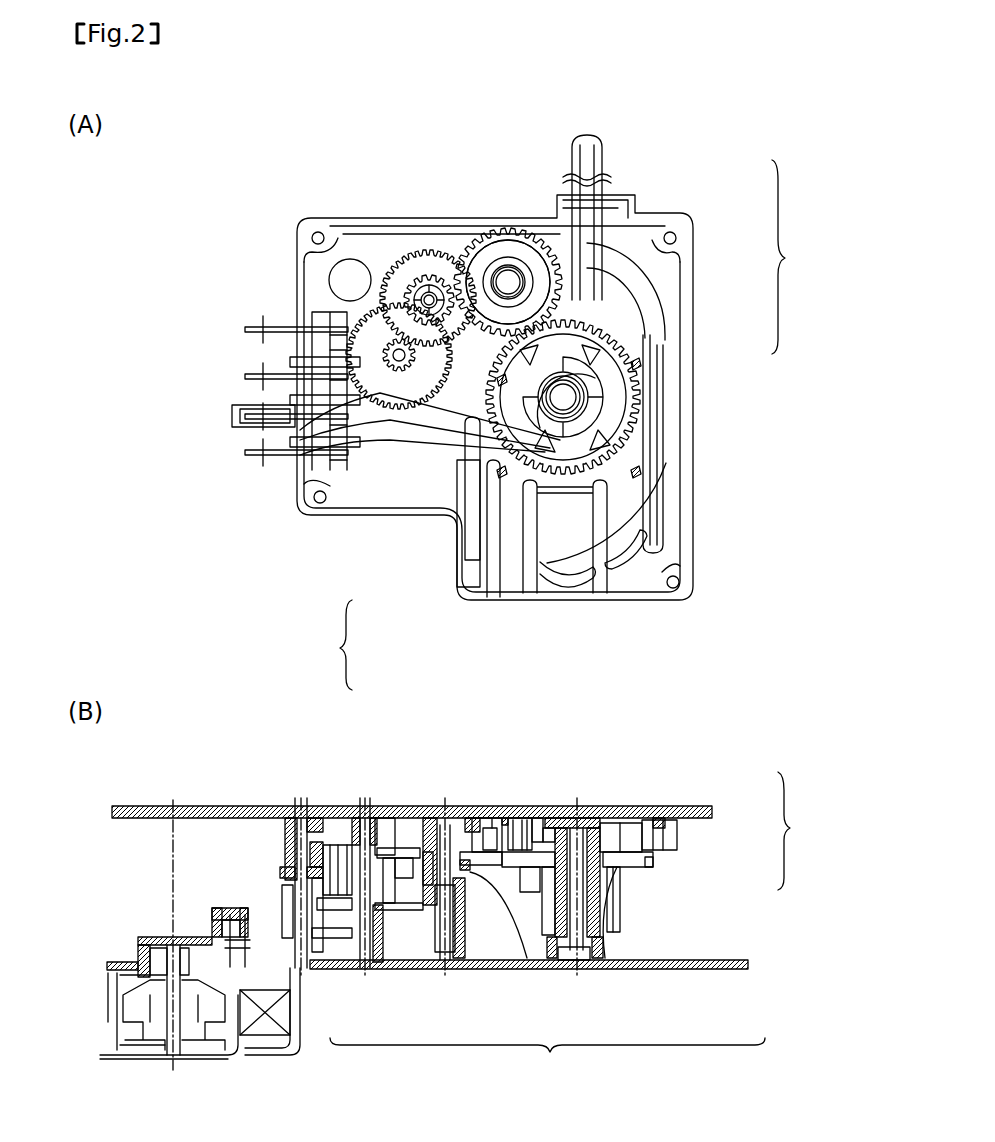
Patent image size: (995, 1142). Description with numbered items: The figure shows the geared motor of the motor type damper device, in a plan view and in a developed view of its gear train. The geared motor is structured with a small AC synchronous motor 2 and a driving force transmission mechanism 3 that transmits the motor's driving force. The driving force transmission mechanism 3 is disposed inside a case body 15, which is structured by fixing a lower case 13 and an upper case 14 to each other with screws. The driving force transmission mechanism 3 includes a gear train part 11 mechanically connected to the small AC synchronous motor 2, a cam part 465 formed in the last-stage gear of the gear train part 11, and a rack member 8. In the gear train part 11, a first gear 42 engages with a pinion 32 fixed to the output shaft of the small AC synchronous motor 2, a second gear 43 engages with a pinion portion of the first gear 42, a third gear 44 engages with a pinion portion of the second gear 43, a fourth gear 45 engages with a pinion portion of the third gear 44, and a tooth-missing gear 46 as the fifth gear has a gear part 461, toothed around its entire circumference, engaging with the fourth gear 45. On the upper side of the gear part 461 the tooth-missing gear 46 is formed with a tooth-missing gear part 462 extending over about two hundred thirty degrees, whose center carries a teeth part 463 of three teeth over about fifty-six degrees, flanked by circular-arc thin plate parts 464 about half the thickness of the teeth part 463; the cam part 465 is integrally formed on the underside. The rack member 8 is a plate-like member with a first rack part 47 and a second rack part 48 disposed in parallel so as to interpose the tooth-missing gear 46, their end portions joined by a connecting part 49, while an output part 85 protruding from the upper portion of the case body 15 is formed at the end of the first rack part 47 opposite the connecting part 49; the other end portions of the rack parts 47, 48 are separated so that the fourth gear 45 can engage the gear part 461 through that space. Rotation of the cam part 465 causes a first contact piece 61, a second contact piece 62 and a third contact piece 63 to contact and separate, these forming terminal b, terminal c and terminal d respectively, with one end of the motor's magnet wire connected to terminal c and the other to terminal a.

The small AC synchronous motor 2 is at (135, 1065).
The driving force transmission mechanism 3 is at (712, 118).
The rack member 8 is at (336, 645).
The gear train part 11 is at (547, 1062).
The lower case 13 is at (666, 248).
The upper case 14 is at (698, 812).
The case body 15 is at (800, 831).
The pinion 32 is at (137, 975).
The first gear 42 is at (460, 470).
The second gear 43 is at (388, 350).
The third gear 44 is at (382, 283).
The fourth gear 45 is at (458, 270).
The tooth-missing gear 46 is at (553, 338).
The gear part 461 is at (508, 282).
The tooth-missing gear part 462 is at (803, 257).
The teeth part 463 is at (590, 405).
The thin plate parts 464 is at (582, 382).
The cam part 465 is at (617, 912).
The first rack part 47 is at (620, 460).
The second rack part 48 is at (478, 530).
The connecting part 49 is at (645, 488).
The first contact piece 61 is at (345, 430).
The second contact piece 62 is at (372, 420).
The third contact piece 63 is at (390, 440).
The output part 85 is at (590, 168).
The terminal a is at (248, 327).
The terminal b is at (248, 374).
The terminal c is at (248, 414).
The terminal d is at (248, 455).